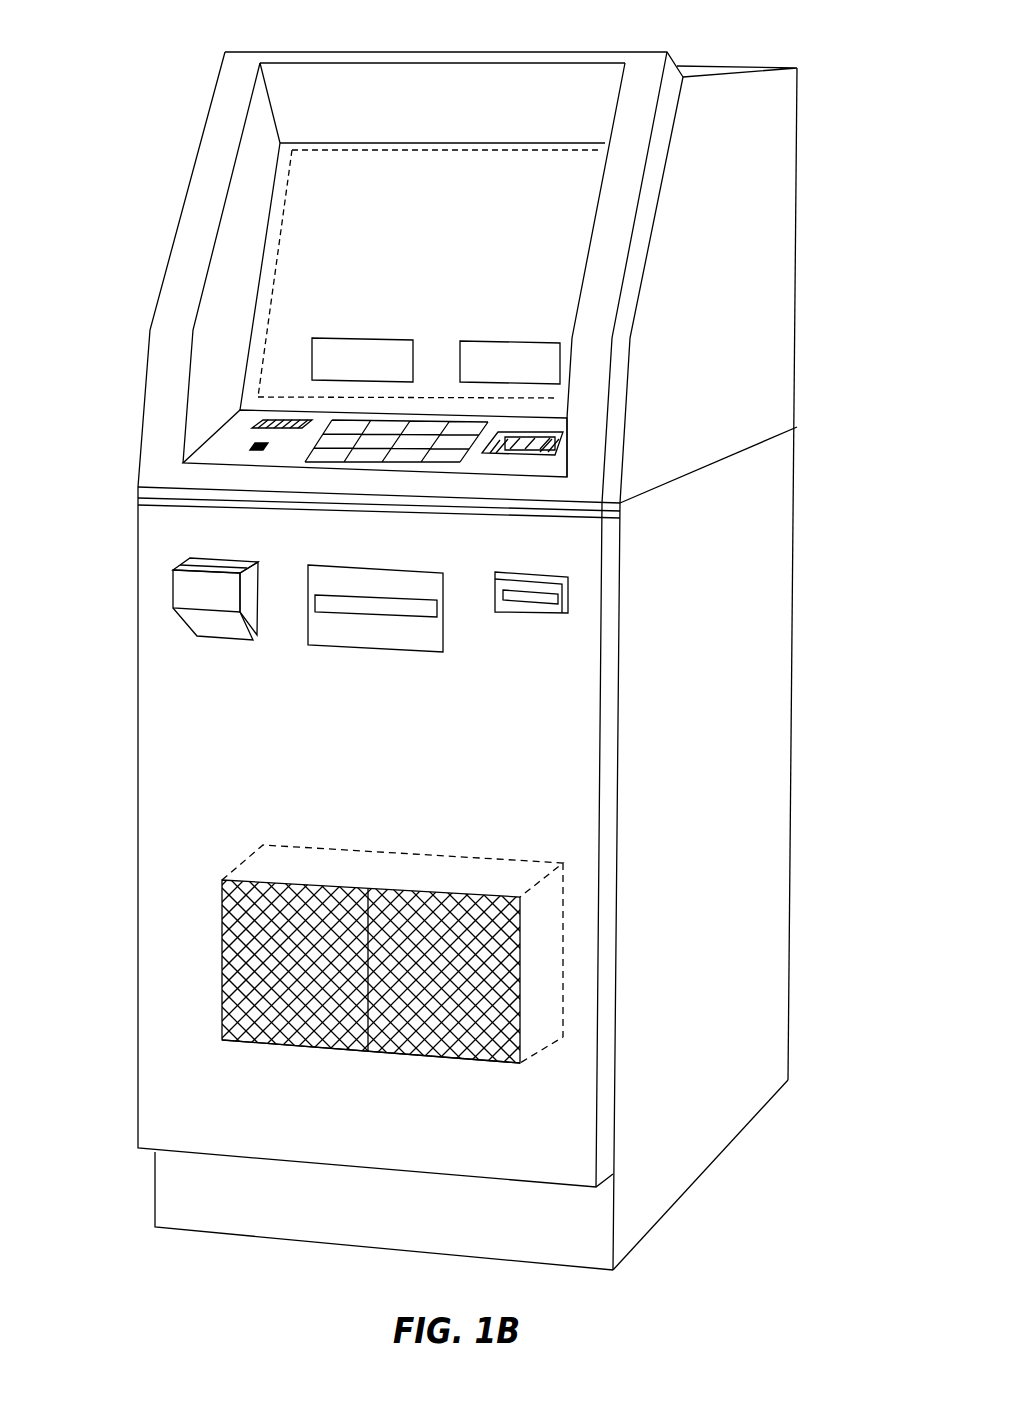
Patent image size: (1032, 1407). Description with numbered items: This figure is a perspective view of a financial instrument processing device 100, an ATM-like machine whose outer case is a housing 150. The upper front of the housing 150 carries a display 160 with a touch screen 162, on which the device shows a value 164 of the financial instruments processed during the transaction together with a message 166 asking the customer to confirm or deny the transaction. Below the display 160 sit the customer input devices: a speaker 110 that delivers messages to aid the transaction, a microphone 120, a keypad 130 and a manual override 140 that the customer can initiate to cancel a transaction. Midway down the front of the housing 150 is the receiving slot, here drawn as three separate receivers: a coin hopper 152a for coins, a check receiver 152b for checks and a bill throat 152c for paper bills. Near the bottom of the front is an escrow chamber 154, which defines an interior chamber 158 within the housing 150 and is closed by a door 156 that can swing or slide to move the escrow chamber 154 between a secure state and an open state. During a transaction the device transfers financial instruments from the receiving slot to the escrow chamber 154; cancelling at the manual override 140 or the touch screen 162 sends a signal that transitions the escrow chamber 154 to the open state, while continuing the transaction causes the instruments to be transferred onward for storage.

The financial instrument processing device 100 is at (826, 10).
The speaker 110 is at (250, 428).
The microphone 120 is at (255, 447).
The keypad 130 is at (340, 462).
The manual override 140 is at (512, 462).
The housing 150 is at (138, 455).
The coin hopper 152a is at (228, 642).
The check receiver 152b is at (377, 650).
The bill throat 152c is at (530, 617).
The escrow chamber 154 is at (222, 930).
The door 156 is at (300, 1037).
The interior chamber 158 is at (502, 1009).
The display 160 is at (268, 218).
The touch screen 162 is at (268, 305).
The value 164 is at (400, 240).
The message 166 is at (378, 306).